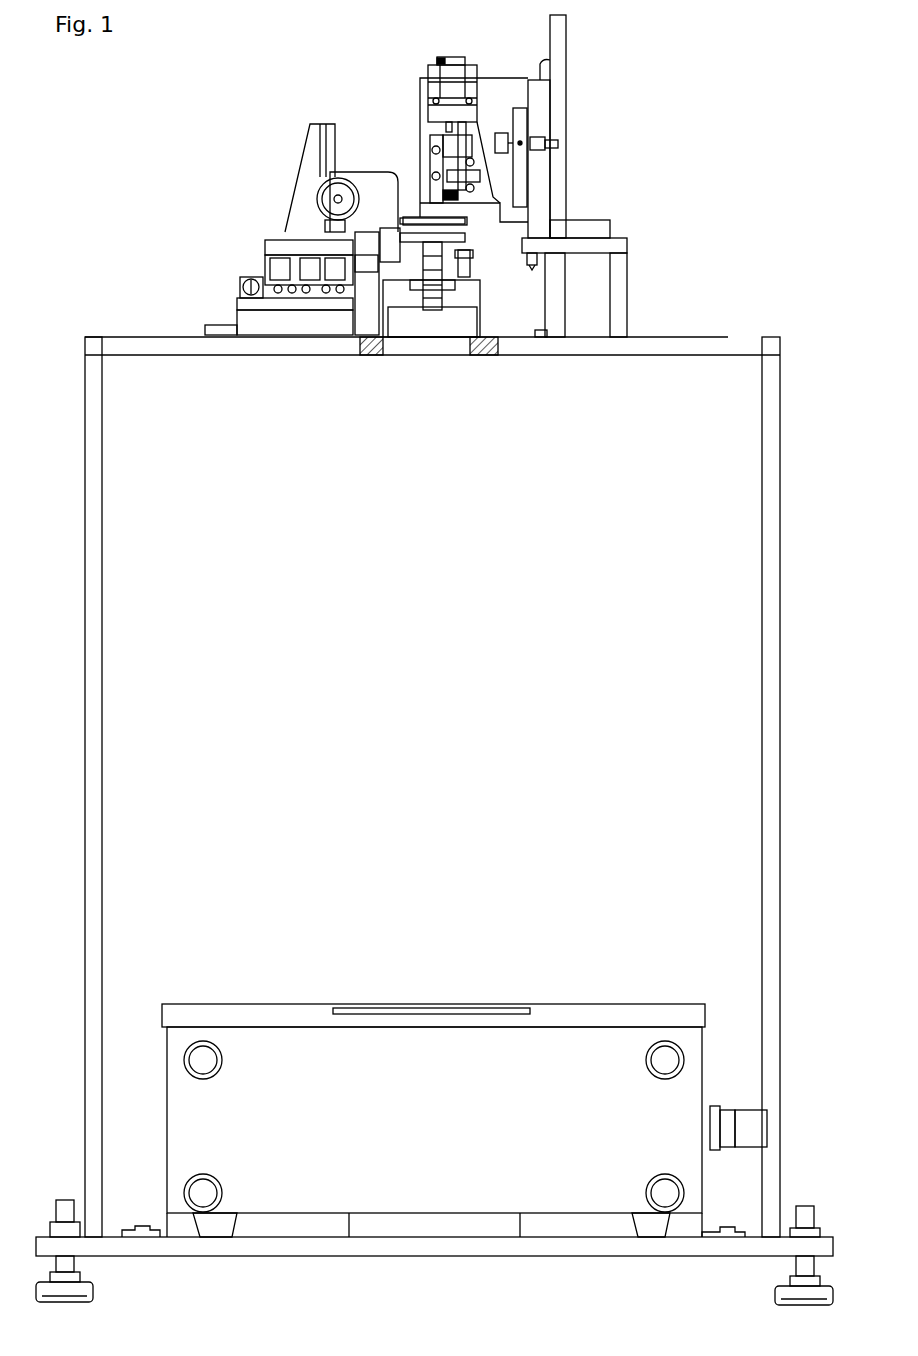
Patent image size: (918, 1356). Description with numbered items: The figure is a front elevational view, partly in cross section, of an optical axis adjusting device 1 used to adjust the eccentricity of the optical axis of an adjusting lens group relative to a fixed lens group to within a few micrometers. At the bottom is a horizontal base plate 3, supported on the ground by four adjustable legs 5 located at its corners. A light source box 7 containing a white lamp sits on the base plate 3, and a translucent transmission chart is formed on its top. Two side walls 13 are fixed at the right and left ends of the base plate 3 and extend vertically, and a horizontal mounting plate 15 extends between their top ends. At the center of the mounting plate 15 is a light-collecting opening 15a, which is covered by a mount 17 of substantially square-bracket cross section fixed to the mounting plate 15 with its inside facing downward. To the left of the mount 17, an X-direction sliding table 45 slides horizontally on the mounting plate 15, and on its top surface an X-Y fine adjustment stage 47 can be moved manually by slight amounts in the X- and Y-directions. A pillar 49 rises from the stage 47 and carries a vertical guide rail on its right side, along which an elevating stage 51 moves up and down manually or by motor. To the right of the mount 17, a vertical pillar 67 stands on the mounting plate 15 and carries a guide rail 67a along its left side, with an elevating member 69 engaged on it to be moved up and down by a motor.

The optical axis adjusting device 1 is at (64, 287).
The base plate 3 is at (532, 1256).
The adjustable legs 5 is at (95, 1283).
The light source box 7 is at (172, 1050).
The side walls 13 is at (90, 836).
The mounting plate 15 is at (130, 340).
The light-collecting opening 15a is at (480, 340).
The mount 17 is at (483, 292).
The X-direction sliding table 45 is at (250, 320).
The X-Y fine adjustment stage 47 is at (275, 248).
The pillar 49 is at (306, 180).
The elevating stage 51 is at (382, 195).
The pillar 67 is at (564, 178).
The guide rail 67a is at (545, 70).
The elevating member 69 is at (489, 60).